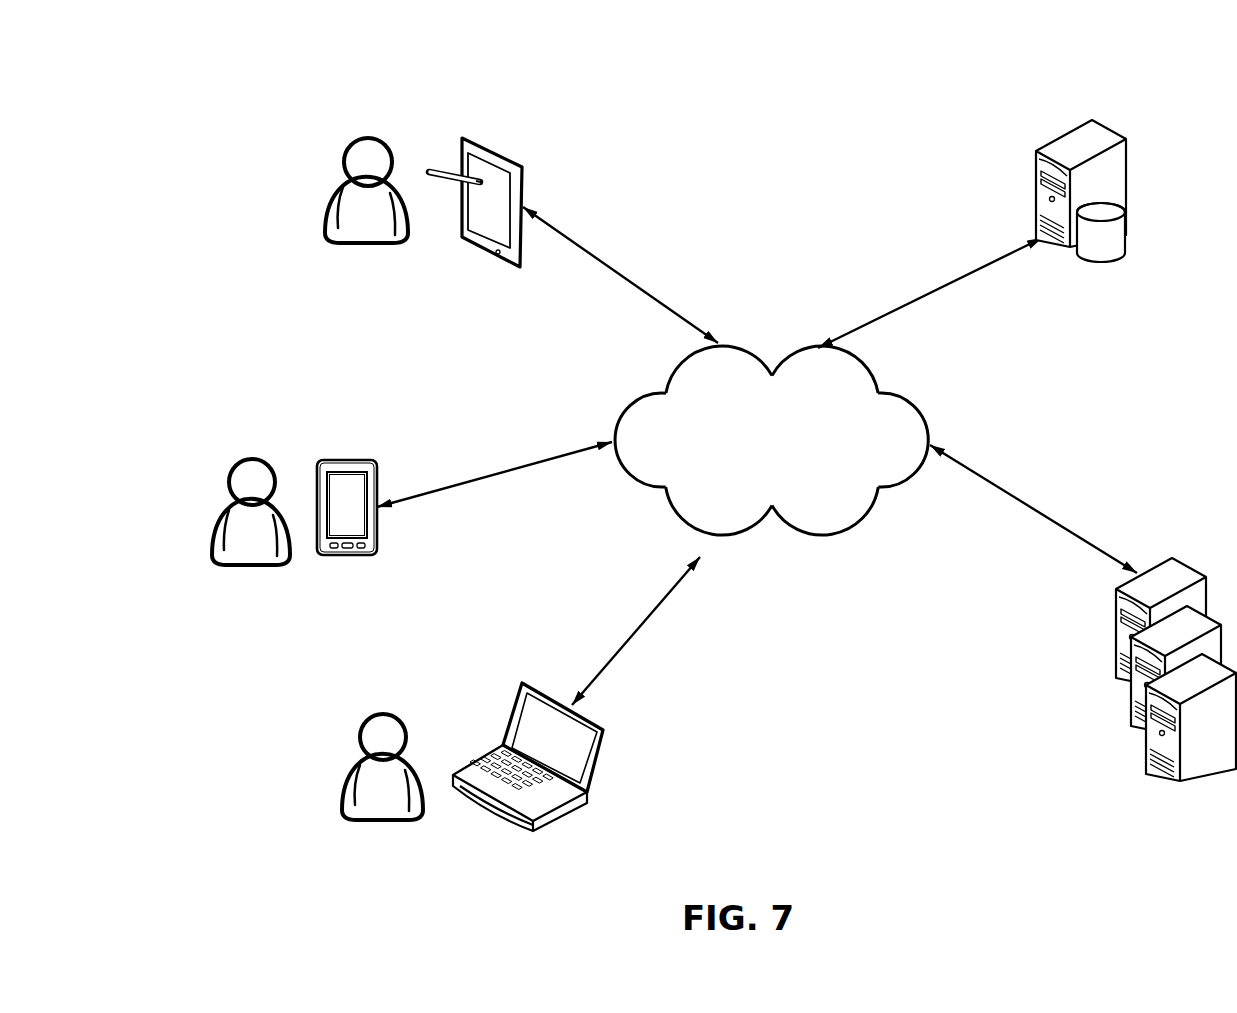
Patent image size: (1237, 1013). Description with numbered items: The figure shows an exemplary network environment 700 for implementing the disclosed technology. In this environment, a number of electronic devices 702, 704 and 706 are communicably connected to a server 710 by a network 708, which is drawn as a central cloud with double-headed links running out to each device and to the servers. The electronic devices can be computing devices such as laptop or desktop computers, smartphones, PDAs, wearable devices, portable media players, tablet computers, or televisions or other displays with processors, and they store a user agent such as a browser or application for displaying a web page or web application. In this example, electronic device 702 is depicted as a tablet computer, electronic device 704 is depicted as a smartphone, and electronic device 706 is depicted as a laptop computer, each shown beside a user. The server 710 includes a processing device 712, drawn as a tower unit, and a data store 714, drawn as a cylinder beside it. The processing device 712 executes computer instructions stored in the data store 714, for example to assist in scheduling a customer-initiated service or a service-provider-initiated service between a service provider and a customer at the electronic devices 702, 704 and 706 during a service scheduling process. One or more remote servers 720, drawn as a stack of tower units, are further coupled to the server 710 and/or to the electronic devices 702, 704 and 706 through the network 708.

The network environment 700 is at (208, 123).
The electronic device 702 is at (512, 155).
The electronic device 704 is at (350, 460).
The electronic device 706 is at (590, 773).
The network 708 is at (757, 463).
The server 710 is at (1060, 275).
The processing device 712 is at (1071, 130).
The data store 714 is at (1113, 253).
The remote servers 720 is at (1108, 705).